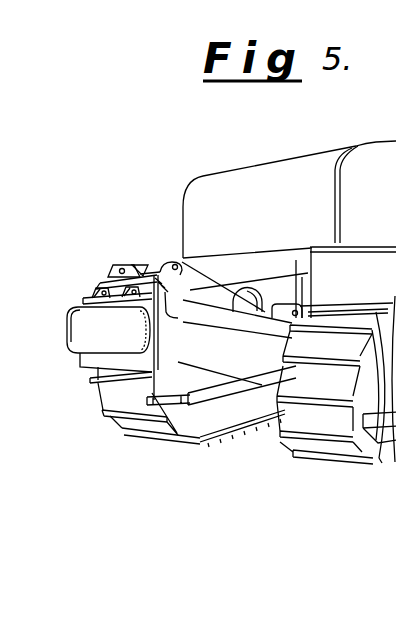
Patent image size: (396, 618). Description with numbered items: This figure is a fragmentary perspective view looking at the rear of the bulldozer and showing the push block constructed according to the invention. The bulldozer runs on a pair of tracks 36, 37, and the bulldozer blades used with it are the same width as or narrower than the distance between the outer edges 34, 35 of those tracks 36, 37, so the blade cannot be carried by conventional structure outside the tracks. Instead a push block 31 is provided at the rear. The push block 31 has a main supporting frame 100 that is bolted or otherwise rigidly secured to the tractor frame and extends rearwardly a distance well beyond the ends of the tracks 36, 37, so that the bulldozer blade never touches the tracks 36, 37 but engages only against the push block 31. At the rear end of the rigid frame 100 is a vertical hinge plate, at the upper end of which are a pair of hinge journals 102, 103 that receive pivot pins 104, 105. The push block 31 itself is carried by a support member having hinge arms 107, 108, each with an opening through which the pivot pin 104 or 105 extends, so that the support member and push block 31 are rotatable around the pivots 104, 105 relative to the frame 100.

The push block 31 is at (77, 330).
The outer edge of track 34 is at (380, 458).
The outer edge of track 35 is at (110, 421).
The track 36 is at (331, 461).
The track 37 is at (168, 433).
The main supporting frame 100 is at (203, 290).
The hinge journal 102 is at (186, 253).
The hinge journal 103 is at (119, 263).
The pivot pin 104 is at (191, 258).
The pivot pin 105 is at (131, 266).
The hinge arm 107 is at (163, 290).
The hinge arm 108 is at (104, 282).